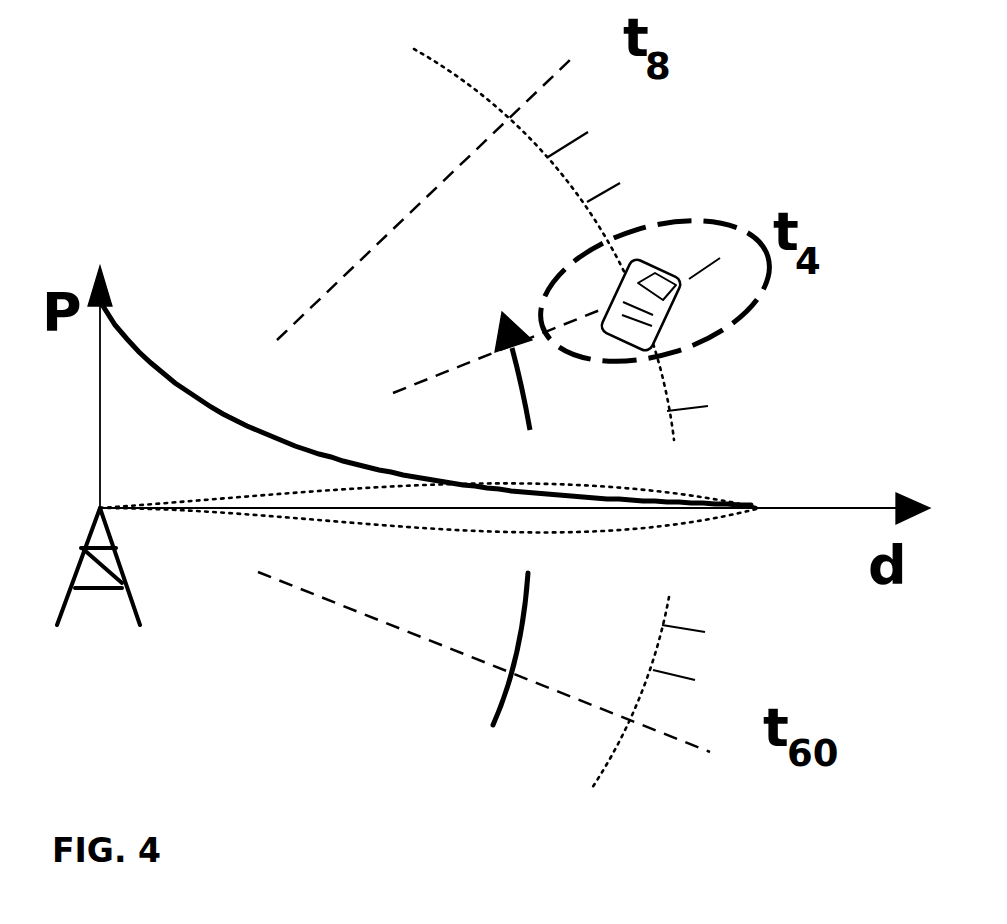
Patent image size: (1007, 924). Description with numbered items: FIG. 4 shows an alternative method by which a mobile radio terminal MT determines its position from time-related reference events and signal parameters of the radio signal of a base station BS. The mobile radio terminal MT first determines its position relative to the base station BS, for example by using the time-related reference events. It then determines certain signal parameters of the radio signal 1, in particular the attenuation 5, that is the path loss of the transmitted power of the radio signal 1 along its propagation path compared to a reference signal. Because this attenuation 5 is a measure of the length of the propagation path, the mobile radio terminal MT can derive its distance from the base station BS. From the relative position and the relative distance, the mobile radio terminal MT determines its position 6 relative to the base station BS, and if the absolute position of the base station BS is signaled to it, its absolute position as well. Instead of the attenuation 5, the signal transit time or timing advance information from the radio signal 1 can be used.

The radio signal 1 is at (630, 520).
The attenuation 5 is at (240, 384).
The position 6 is at (702, 252).
The base station BS is at (115, 633).
The mobile radio terminal MT is at (655, 305).